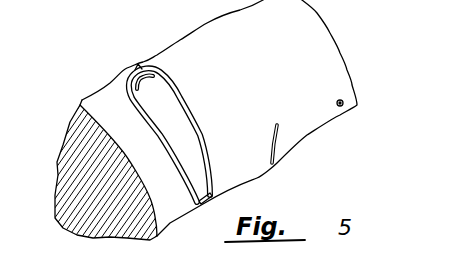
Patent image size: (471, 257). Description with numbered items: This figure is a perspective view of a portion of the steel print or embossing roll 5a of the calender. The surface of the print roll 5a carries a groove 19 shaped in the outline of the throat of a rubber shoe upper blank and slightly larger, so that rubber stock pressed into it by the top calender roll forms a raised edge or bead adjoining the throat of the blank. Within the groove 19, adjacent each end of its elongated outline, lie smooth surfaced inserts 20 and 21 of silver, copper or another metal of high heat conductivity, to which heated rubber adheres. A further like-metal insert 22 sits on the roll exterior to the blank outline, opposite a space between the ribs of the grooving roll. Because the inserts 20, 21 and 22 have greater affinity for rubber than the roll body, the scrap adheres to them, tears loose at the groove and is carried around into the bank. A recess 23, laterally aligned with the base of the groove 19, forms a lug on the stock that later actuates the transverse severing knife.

The print or embossing roll 5a is at (323, 40).
The groove 19 is at (192, 114).
The smooth surfaced insert 20 is at (151, 76).
The smooth surfaced insert 21 is at (203, 204).
The insert 22 is at (277, 143).
The recess 23 is at (343, 103).